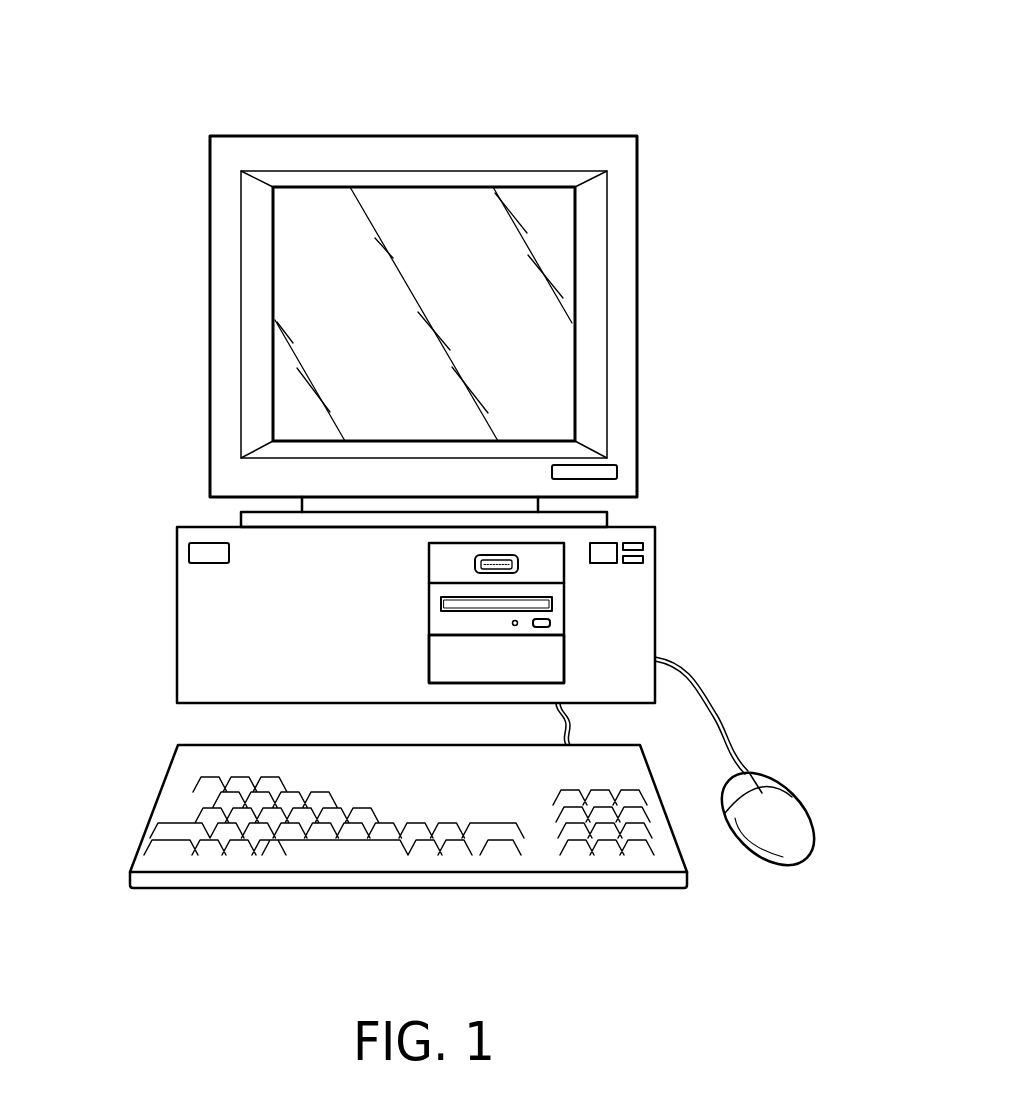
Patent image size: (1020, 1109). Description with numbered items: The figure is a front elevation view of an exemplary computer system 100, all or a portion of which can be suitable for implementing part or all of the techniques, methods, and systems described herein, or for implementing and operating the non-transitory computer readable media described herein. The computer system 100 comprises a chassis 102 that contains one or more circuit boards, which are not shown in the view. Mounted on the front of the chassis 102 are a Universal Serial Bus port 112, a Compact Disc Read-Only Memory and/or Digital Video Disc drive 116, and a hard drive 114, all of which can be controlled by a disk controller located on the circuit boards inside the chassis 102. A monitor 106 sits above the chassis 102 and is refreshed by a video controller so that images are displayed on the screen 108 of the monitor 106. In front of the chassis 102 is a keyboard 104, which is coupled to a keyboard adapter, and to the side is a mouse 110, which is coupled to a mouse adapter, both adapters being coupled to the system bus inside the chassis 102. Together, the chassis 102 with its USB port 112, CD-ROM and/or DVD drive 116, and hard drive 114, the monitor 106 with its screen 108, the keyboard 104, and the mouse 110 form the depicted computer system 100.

The computer system 100 is at (630, 108).
The chassis 102 is at (177, 618).
The keyboard 104 is at (157, 802).
The monitor 106 is at (297, 136).
The screen 108 is at (328, 320).
The mouse 110 is at (788, 808).
The Universal Serial Bus (USB) port 112 is at (518, 560).
The hard drive 114 is at (553, 658).
The CD-ROM and/or DVD drive 116 is at (563, 613).